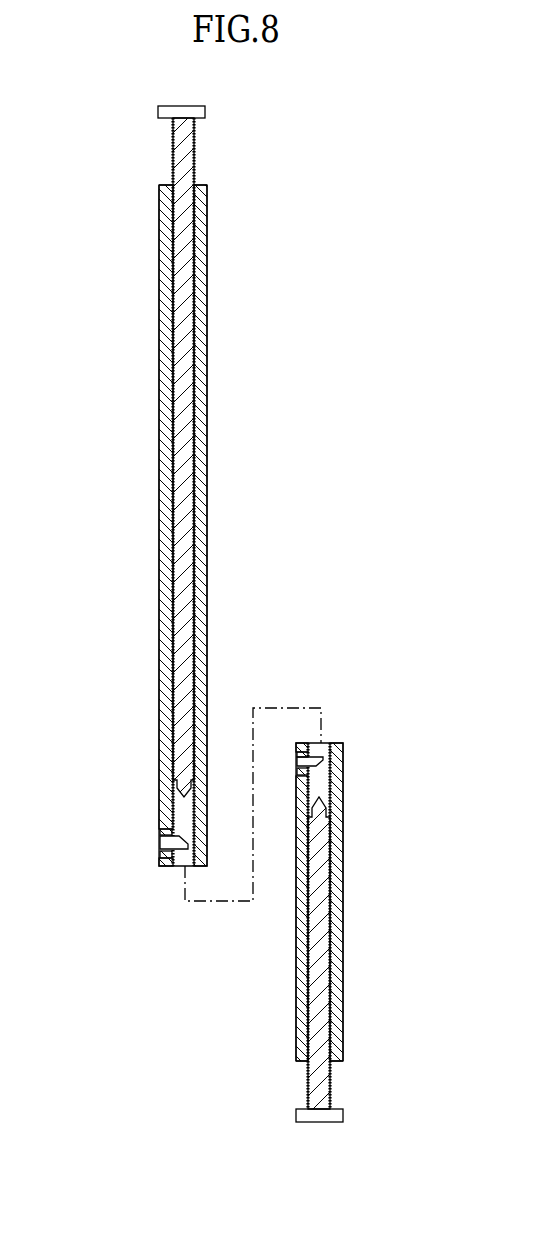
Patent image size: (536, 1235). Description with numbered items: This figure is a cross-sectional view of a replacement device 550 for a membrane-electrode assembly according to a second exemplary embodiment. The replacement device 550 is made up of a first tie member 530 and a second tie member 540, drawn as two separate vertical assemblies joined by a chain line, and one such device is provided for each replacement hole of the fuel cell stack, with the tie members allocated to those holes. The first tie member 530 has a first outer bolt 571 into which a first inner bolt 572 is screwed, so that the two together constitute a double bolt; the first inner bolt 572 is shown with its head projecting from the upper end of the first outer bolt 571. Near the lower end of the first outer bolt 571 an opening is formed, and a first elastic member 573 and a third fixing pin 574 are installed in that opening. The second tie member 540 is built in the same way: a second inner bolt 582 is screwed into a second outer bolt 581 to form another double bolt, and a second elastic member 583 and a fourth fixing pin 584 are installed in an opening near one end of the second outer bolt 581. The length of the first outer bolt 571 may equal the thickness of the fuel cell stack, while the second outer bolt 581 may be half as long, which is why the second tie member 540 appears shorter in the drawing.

The first tie member 530 is at (104, 491).
The second tie member 540 is at (372, 893).
The replacement device 550 is at (386, 416).
The first outer bolt 571 is at (165, 240).
The first inner bolt 572 is at (178, 157).
The first elastic member 573 is at (160, 831).
The third fixing pin 574 is at (165, 850).
The second outer bolt 581 is at (343, 970).
The second inner bolt 582 is at (322, 1083).
The second elastic member 583 is at (322, 767).
The fourth fixing pin 584 is at (312, 754).